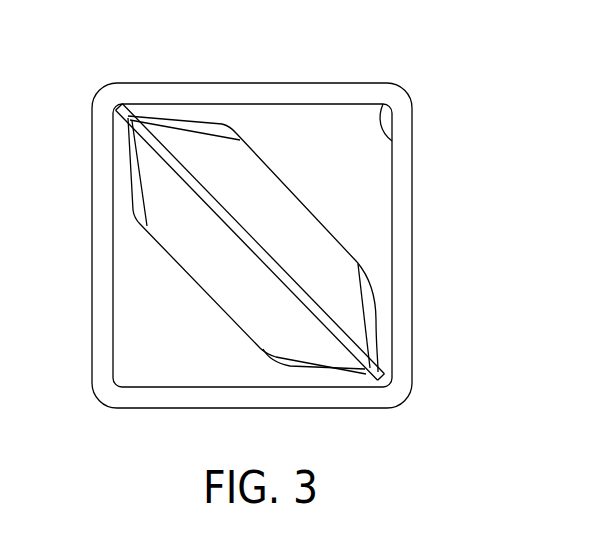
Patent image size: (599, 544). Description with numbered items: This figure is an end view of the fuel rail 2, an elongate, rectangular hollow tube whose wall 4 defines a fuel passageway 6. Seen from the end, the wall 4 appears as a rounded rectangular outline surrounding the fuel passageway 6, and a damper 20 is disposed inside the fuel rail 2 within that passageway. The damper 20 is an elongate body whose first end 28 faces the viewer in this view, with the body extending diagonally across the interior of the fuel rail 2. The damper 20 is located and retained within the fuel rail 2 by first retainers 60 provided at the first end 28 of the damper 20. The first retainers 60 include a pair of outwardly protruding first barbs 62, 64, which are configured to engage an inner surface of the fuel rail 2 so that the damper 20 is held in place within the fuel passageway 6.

The fuel rail 2 is at (252, 217).
The wall 4 is at (248, 92).
The fuel passageway 6 is at (385, 105).
The damper 20 is at (328, 265).
The first end 28 is at (340, 342).
The first retainers 60 is at (285, 244).
The first barb 62 is at (121, 106).
The first barb 64 is at (380, 383).